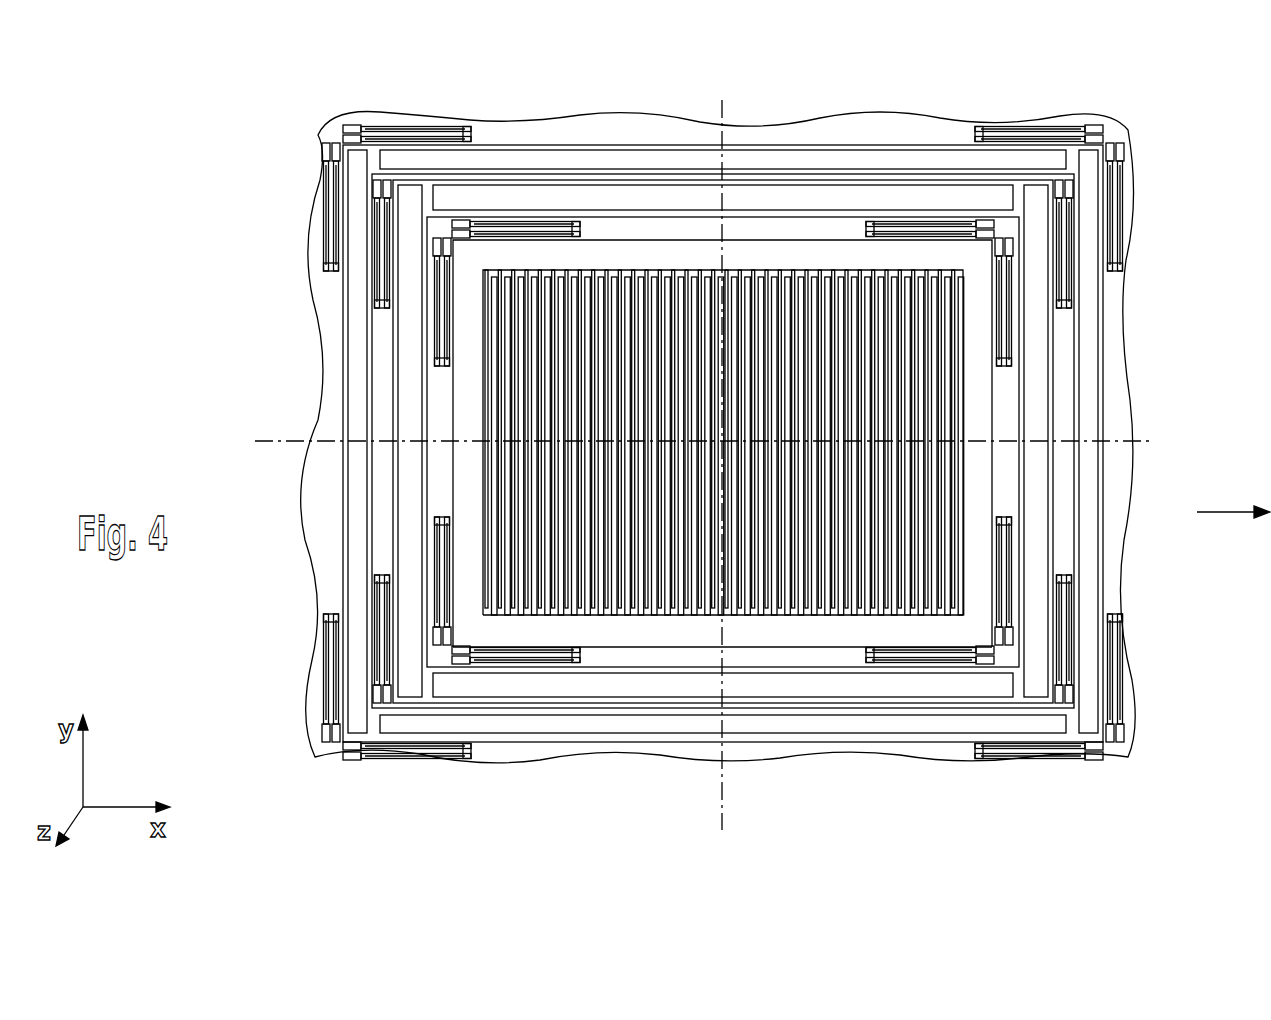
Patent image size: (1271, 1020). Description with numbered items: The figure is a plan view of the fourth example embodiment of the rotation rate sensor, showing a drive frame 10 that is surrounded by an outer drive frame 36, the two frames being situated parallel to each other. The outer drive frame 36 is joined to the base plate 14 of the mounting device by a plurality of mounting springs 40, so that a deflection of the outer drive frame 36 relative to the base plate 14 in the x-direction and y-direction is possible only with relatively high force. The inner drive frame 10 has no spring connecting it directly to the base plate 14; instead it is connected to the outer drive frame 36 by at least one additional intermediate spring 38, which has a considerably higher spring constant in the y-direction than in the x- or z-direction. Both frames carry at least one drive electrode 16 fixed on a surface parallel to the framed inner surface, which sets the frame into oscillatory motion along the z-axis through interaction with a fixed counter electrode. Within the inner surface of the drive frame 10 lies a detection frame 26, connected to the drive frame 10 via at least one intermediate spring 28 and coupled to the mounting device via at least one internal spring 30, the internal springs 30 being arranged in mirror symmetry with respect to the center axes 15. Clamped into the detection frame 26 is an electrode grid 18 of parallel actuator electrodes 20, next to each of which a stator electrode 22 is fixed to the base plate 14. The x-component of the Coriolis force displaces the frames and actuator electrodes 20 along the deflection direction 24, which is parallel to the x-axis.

The drive frame 10 is at (530, 183).
The base plate 14 is at (692, 135).
The center axes 15 is at (295, 438).
The drive electrode 16 is at (628, 202).
The electrode grid 18 is at (837, 625).
The actuator electrodes 20 is at (617, 613).
The stator electrode 22 is at (840, 275).
The deflection direction 24 is at (1232, 512).
The detection frame 26 is at (768, 255).
The intermediate spring 28 is at (922, 227).
The internal spring 30 is at (440, 332).
The outer drive frame 36 is at (1103, 415).
The additional intermediate spring 38 is at (1070, 247).
The mounting springs 40 is at (410, 128).